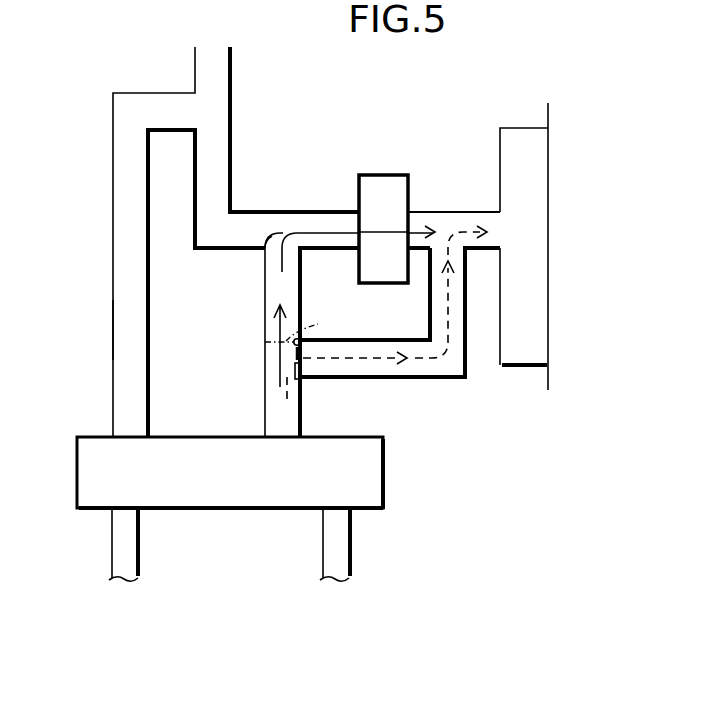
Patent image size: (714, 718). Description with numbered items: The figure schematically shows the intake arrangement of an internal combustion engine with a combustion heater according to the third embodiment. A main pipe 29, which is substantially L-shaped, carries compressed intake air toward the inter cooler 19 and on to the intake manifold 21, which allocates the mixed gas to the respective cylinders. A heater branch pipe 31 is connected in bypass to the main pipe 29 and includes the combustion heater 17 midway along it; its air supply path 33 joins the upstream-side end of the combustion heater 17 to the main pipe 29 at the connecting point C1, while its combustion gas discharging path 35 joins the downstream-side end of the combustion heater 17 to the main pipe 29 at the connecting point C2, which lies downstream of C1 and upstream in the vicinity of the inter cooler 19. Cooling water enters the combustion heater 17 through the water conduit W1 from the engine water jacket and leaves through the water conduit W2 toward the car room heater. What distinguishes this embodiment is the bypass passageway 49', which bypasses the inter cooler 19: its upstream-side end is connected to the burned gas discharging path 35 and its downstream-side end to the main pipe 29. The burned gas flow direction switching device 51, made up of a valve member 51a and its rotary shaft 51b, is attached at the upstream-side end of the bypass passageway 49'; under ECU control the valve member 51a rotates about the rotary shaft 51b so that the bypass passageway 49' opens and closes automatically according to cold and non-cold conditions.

The combustion heater 17 is at (228, 509).
The inter cooler 19 is at (377, 175).
The intake manifold 21 is at (522, 367).
The main pipe 29 is at (215, 66).
The heater branch pipe 31 is at (113, 323).
The air supply path 33 is at (120, 232).
The combustion gas discharging path 35 is at (272, 348).
The bypass passageway 49' is at (393, 327).
The burned gas flow direction switching device 51 is at (303, 368).
The valve member 51a is at (302, 339).
The rotary shaft 51b is at (296, 347).
The connecting point C1 is at (212, 108).
The connecting point C2 is at (268, 246).
The water conduit W1 is at (351, 546).
The water conduit W2 is at (112, 546).